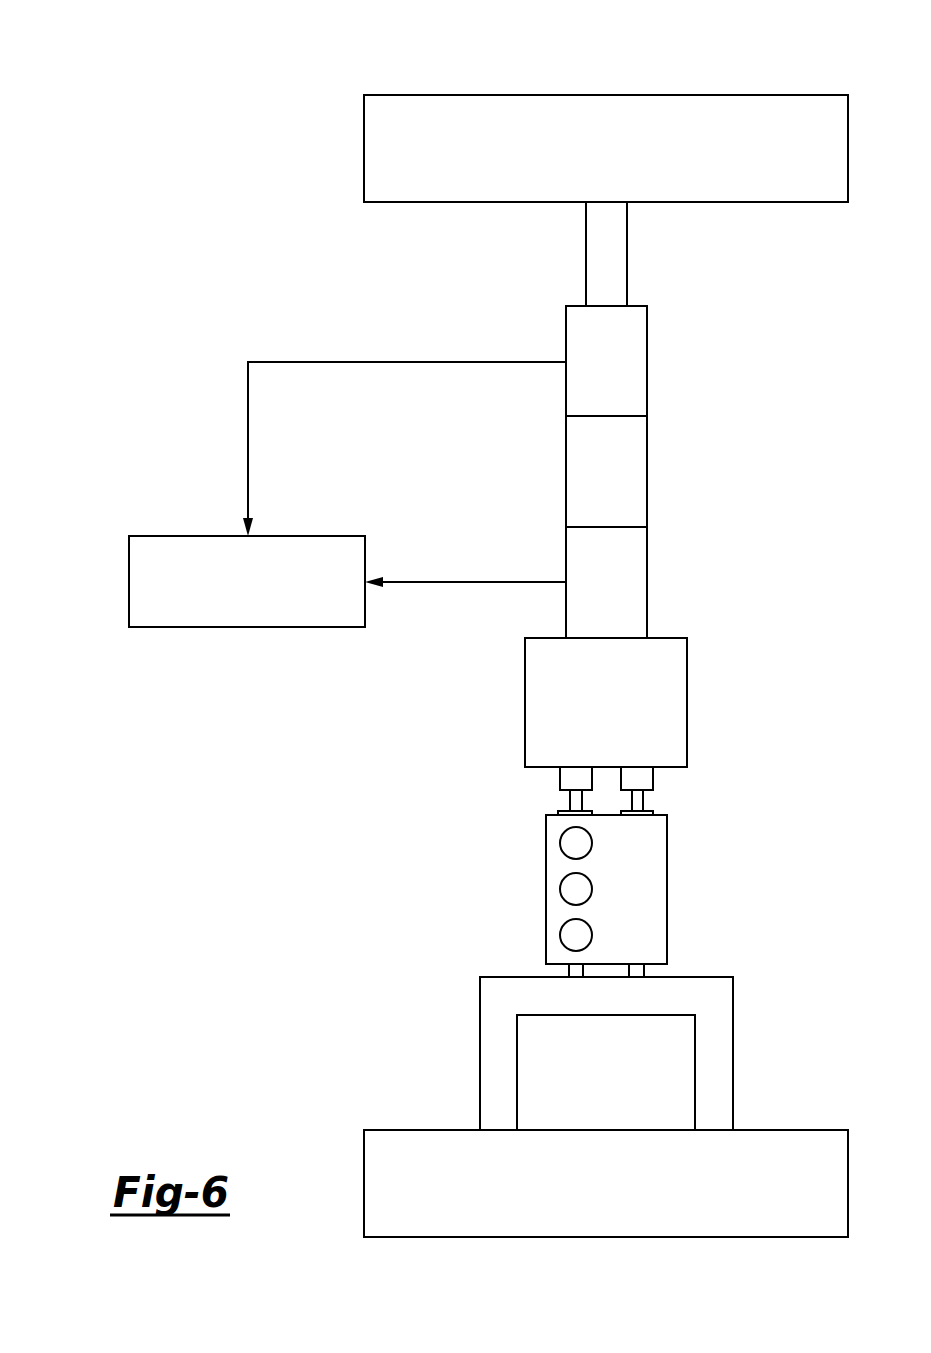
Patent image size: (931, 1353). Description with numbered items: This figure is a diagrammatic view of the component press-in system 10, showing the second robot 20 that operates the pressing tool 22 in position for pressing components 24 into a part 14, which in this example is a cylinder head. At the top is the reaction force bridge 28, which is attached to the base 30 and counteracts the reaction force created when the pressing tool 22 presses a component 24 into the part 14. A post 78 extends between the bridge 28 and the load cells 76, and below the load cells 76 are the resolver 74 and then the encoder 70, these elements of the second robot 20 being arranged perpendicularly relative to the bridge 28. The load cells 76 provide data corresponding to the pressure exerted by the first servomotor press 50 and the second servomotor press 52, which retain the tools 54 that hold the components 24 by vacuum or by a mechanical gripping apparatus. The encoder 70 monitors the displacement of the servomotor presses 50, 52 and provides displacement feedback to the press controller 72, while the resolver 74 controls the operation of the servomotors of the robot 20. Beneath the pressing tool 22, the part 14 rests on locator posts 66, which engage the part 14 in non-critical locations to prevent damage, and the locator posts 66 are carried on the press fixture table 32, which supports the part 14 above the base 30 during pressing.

The component press-in system 10 is at (258, 140).
The part 14 is at (660, 921).
The second robot 20 is at (602, 472).
The pressing tool 22 is at (678, 680).
The components 24 is at (552, 814).
The reaction force bridge 28 is at (802, 97).
The base 30 is at (376, 1133).
The press fixture table 32 is at (730, 1090).
The first servomotor press 50 is at (566, 783).
The second servomotor press 52 is at (647, 783).
The tools 54 is at (574, 800).
The locator posts 66 is at (622, 962).
The encoder 70 is at (633, 563).
The press controller 72 is at (129, 582).
The resolver 74 is at (577, 480).
The load cells 76 is at (633, 367).
The post 78 is at (620, 260).